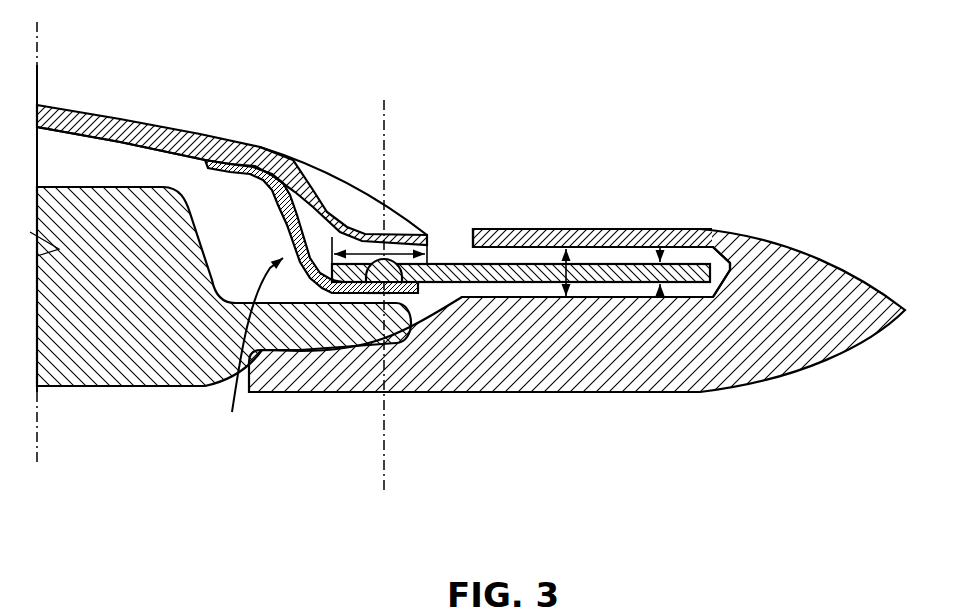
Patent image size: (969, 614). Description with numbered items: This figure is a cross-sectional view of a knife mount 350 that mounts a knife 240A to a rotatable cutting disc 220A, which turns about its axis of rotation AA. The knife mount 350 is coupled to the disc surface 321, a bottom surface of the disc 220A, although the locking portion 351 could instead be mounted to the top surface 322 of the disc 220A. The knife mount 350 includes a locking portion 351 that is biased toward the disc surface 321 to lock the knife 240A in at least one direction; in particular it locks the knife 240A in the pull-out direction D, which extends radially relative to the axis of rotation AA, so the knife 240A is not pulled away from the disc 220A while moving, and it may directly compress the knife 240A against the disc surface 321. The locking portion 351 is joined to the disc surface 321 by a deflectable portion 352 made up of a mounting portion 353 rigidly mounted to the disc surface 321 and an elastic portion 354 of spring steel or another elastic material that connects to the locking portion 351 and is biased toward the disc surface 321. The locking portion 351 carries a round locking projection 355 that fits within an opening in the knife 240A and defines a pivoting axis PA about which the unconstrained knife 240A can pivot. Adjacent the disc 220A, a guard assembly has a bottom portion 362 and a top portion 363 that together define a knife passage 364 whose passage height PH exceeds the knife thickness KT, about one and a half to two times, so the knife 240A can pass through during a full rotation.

The axis of rotation AA is at (37, 43).
The pivoting axis PA is at (384, 471).
The disc 220A is at (308, 162).
The knife 240A is at (600, 268).
The disc surface 321 is at (193, 153).
The top surface 322 is at (147, 120).
The knife mount 350 is at (230, 276).
The locking portion 351 is at (376, 304).
The deflectable portion 352 is at (232, 412).
The mounting portion 353 is at (263, 164).
The elastic portion 354 is at (341, 294).
The locking projection 355 is at (380, 259).
The bottom portion 362 is at (577, 310).
The top portion 363 is at (739, 228).
The knife passage 364 is at (722, 280).
The pull-out direction D is at (403, 252).
The passage height PH is at (567, 272).
The knife thickness KT is at (663, 272).